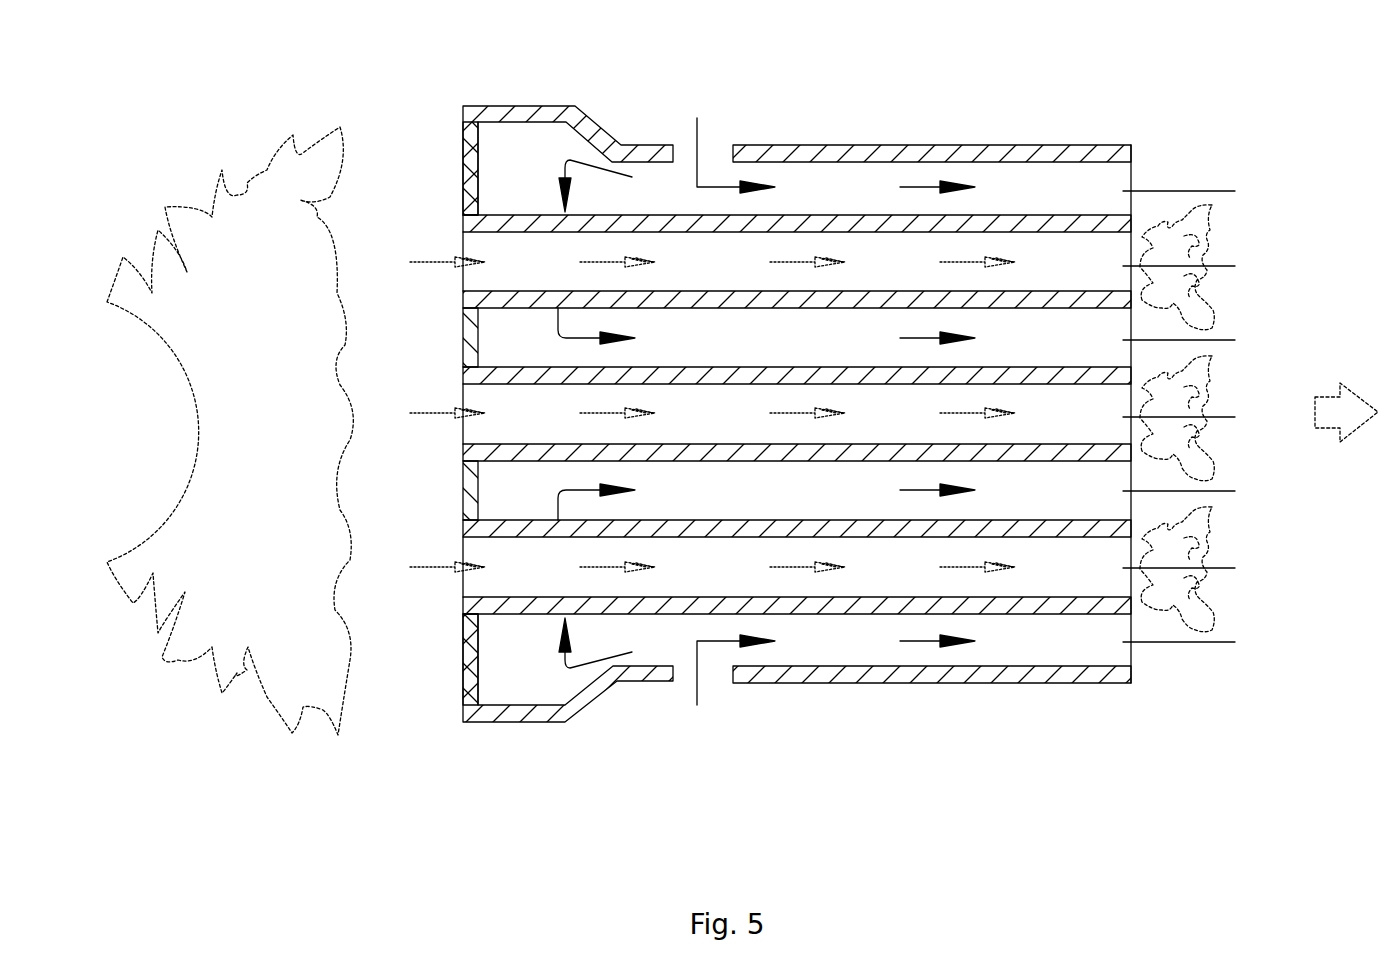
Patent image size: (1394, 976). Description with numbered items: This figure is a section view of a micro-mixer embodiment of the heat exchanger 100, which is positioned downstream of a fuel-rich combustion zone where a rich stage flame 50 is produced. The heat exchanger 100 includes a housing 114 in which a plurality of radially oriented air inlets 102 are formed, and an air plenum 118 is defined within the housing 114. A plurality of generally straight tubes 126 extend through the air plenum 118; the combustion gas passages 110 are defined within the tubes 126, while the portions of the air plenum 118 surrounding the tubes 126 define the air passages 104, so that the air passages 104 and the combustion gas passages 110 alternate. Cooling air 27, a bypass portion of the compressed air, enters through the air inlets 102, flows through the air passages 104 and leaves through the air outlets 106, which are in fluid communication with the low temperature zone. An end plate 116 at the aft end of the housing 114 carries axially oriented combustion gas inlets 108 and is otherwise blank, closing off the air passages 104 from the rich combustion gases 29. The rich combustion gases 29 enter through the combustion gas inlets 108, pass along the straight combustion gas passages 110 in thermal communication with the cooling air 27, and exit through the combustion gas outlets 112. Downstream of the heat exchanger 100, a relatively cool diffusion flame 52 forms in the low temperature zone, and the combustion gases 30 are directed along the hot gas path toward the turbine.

The rich stage flame 50 is at (250, 655).
The heat exchanger 100 is at (1003, 104).
The air inlets 102 is at (690, 160).
The cooling air 27 is at (697, 118).
The air passages 104 is at (838, 190).
The housing 114 is at (1068, 146).
The end plate 116 is at (467, 160).
The air plenum 118 is at (828, 644).
The tubes 126 is at (990, 300).
The combustion gas inlets 108 is at (463, 248).
The combustion gas passages 110 is at (678, 276).
The combustion gases 29 is at (435, 418).
The air outlets 106 is at (1205, 416).
The combustion gas outlets 112 is at (1205, 417).
The diffusion flame 52 is at (1195, 235).
The combustion gases 30 is at (1352, 408).